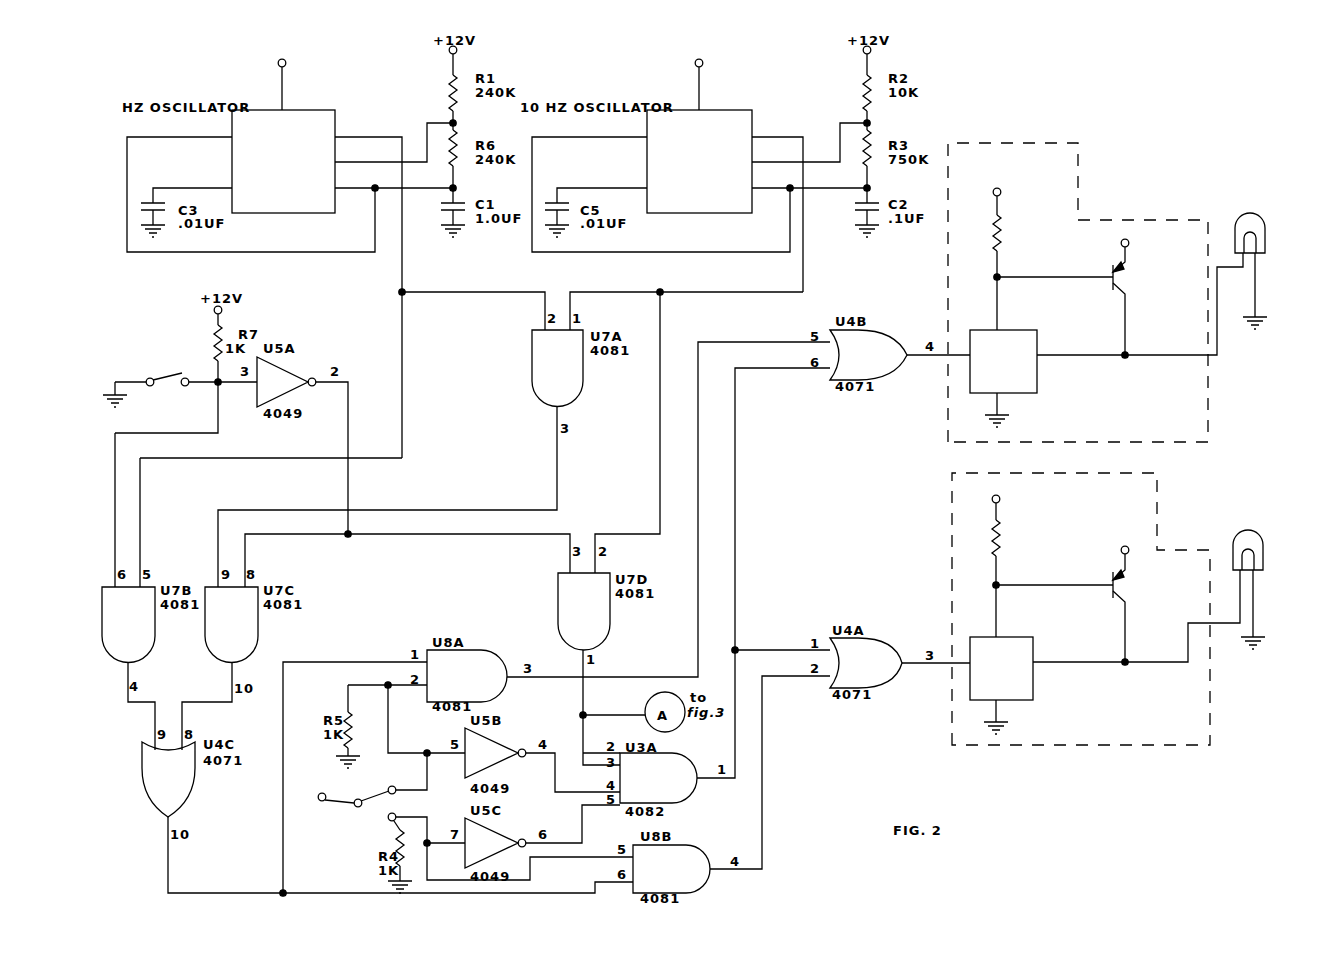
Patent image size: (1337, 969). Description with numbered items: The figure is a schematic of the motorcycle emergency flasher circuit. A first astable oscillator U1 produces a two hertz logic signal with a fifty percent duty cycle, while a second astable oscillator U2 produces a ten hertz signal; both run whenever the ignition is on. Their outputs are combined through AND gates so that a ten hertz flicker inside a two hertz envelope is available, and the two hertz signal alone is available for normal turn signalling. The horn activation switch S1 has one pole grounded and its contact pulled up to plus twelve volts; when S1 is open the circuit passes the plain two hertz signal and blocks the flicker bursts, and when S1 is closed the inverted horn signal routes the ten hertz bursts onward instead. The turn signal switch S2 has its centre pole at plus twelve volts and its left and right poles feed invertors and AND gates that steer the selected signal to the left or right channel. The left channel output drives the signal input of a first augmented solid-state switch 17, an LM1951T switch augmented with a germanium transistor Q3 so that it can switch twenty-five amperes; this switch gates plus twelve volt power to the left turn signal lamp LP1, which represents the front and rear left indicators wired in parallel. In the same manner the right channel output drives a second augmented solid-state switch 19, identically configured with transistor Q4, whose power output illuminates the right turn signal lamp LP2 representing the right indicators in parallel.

The first augmented solid-state switch 17 is at (1078, 143).
The second augmented solid-state switch 19 is at (952, 514).
The first 2 Hz astable oscillator U1 is at (289, 144).
The second 10 Hz astable oscillator U2 is at (705, 144).
The horn activation switch S1 is at (180, 387).
The turn signal switch S2 is at (340, 804).
The germanium transistor Q3 is at (1151, 290).
The germanium transistor Q4 is at (1151, 597).
The left turn signal lamp LP1 is at (1239, 258).
The right turn signal lamp LP2 is at (1234, 578).